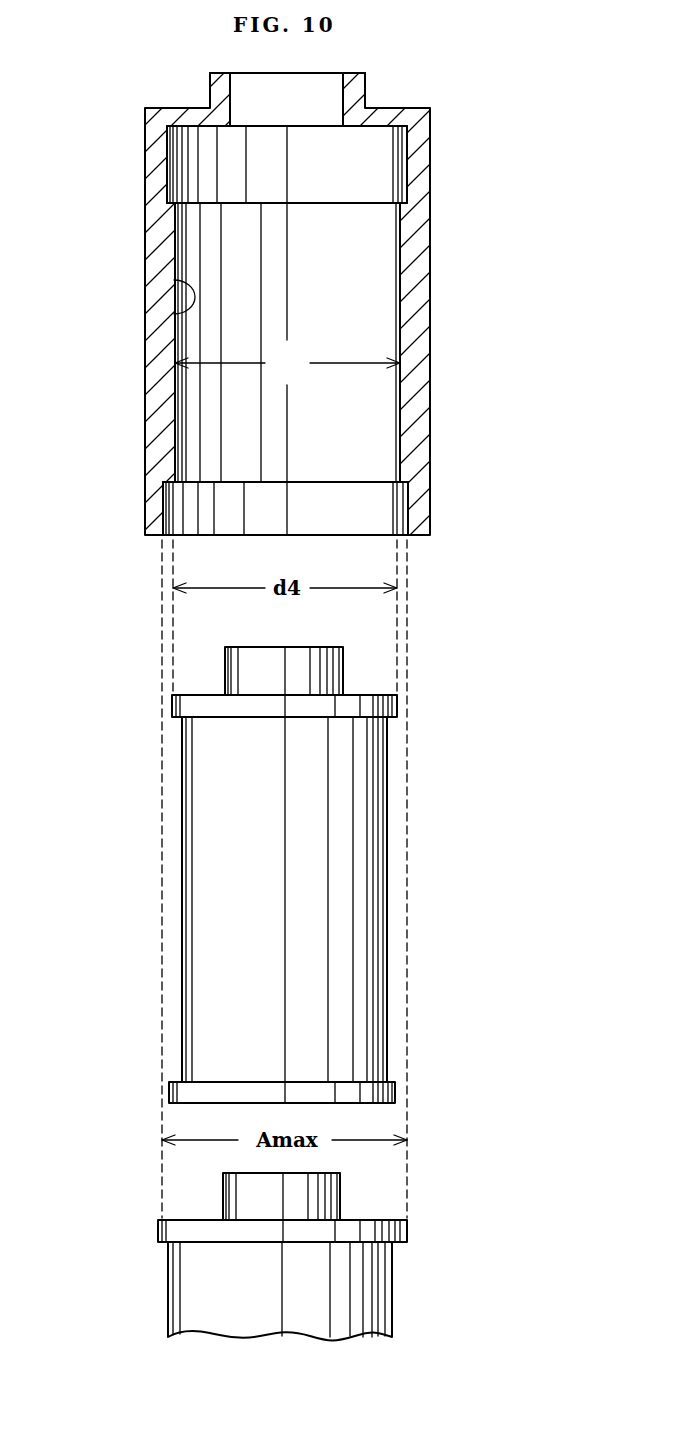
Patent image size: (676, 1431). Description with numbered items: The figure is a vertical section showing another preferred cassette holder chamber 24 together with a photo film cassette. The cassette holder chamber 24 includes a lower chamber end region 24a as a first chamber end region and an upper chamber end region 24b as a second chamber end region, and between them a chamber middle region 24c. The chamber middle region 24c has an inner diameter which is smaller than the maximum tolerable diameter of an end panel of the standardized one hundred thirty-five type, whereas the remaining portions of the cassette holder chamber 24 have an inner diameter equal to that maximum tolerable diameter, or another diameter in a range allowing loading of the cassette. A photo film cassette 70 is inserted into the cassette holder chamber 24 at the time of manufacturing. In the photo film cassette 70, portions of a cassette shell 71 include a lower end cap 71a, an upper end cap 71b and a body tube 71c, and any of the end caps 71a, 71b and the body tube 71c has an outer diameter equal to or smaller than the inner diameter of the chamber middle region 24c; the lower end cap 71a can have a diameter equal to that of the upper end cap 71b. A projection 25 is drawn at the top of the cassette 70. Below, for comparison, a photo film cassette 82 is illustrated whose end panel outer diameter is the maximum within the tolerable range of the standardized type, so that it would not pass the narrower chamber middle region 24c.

The cassette holder chamber 24 is at (190, 309).
The lower chamber end region 24a is at (443, 503).
The upper chamber end region 24b is at (443, 130).
The chamber middle region 24c is at (441, 160).
The projection of filter element 25 is at (345, 663).
The photo film cassette 70 is at (288, 875).
The cassette shell 71 is at (300, 899).
The lower end cap 71a is at (438, 1074).
The upper end cap 71b is at (438, 697).
The body tube 71c is at (439, 730).
The photo film cassette 82 is at (392, 1299).